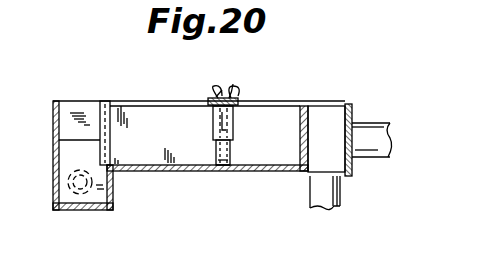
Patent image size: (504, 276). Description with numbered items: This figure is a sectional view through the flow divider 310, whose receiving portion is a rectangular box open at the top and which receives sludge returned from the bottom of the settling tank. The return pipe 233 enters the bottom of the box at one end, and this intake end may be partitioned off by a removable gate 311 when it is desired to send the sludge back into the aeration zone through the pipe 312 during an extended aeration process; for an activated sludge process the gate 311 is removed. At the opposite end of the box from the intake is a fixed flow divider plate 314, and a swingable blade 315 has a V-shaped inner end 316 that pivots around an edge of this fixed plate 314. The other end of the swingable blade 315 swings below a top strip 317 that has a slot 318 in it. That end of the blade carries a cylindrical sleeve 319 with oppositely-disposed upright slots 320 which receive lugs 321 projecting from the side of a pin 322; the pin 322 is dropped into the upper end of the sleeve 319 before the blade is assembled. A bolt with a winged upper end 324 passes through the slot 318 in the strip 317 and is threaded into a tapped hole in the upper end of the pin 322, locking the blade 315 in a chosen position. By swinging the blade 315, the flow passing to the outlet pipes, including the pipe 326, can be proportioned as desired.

The flow divider 310 is at (164, 97).
The removable gate 311 is at (312, 118).
The pipe 312 is at (384, 133).
The fixed flow divider plate 314 is at (80, 112).
The swingable blade 315 is at (158, 150).
The V-shaped inner end 316 is at (58, 140).
The top strip 317 is at (246, 96).
The slot 318 is at (232, 94).
The cylindrical sleeve 319 is at (232, 154).
The upright slots 320 is at (218, 123).
The lugs 321 is at (232, 128).
The pin 322 is at (225, 170).
The winged upper end 324 is at (224, 92).
The pipe 326 is at (70, 206).
The pipe 233 is at (342, 186).